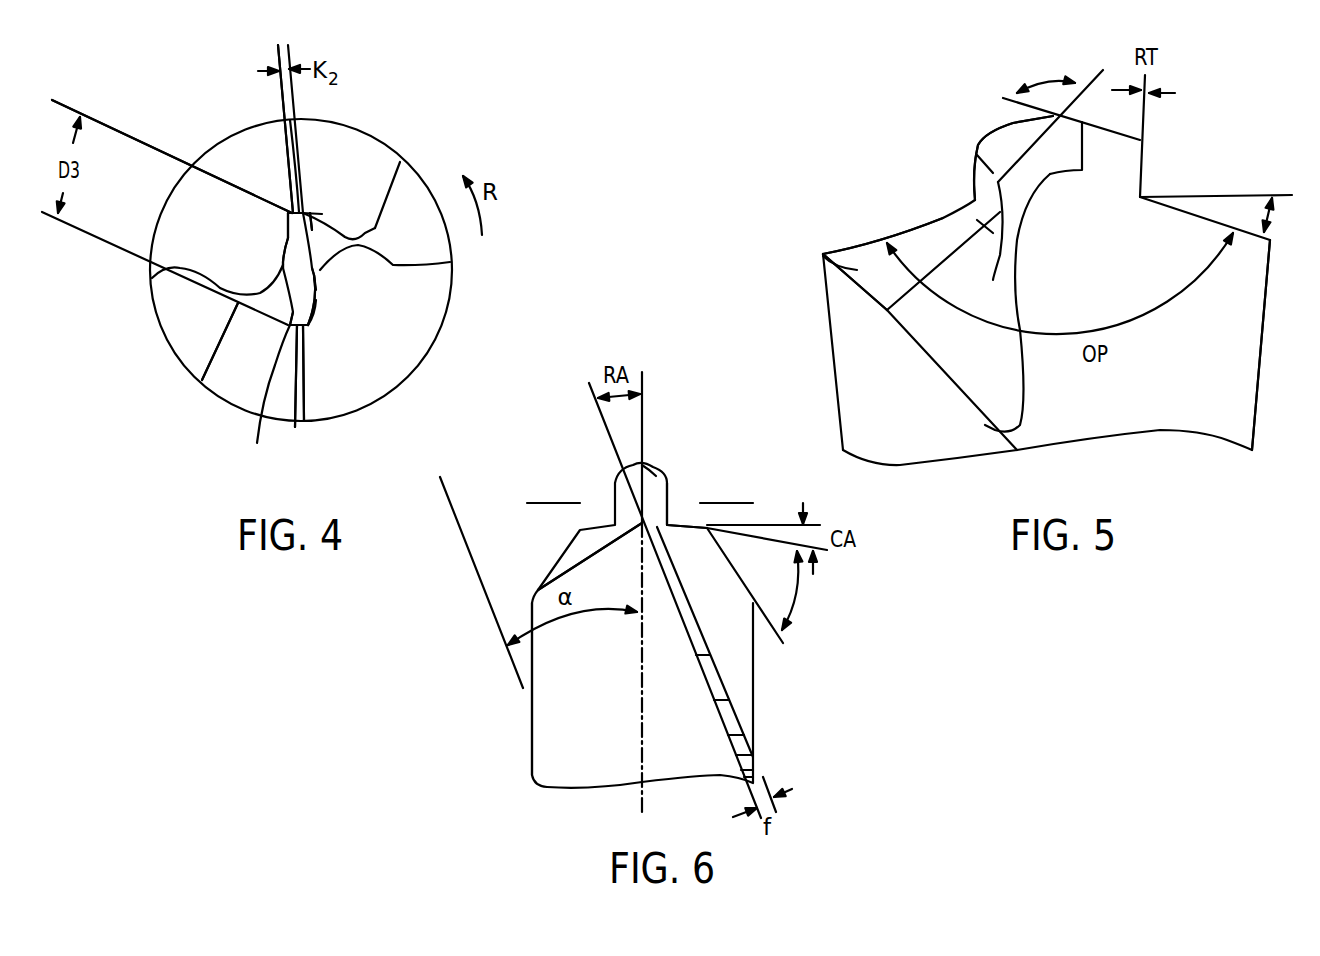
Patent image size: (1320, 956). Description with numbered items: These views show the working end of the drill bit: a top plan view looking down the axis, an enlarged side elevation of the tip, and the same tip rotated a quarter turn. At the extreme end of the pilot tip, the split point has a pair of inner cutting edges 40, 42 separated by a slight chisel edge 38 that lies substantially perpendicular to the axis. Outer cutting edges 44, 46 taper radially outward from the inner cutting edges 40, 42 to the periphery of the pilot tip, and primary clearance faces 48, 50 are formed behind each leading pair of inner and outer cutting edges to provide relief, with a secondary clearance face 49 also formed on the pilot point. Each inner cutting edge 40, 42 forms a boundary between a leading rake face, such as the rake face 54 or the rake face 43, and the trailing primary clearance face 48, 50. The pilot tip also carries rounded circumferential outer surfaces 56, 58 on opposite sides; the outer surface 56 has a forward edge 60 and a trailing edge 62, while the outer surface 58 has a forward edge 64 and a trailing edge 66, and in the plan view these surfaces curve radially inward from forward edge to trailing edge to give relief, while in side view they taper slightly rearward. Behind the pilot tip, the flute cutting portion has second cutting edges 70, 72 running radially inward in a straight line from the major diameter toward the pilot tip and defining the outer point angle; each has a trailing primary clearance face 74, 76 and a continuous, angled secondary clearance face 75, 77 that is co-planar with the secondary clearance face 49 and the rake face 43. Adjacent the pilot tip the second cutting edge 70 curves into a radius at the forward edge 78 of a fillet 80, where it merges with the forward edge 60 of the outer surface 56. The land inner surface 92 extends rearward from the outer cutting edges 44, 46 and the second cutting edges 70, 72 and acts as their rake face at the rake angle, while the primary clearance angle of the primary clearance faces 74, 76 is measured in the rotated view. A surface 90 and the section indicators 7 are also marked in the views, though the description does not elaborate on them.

In FIG. 6, the section line 7- 7 is at (539, 520).
In FIG. 4, the chisel edge 38 is at (312, 283).
In FIG. 4, the inner cutting edge 40 is at (318, 280).
In FIG. 4, the inner cutting edge 42 is at (280, 266).
In FIG. 5, the inner cutting edge 42 is at (1055, 113).
In FIG. 5, the rake face 43 is at (1073, 133).
In FIG. 4, the outer cutting edge 44 is at (313, 322).
In FIG. 4, the outer cutting edge 46 is at (285, 247).
In FIG. 5, the outer cutting edge 46 is at (1124, 136).
In FIG. 4, the primary clearance face 48 is at (287, 315).
In FIG. 5, the primary clearance face 48 is at (1010, 127).
In FIG. 5, the secondary clearance face 49 is at (1027, 172).
In FIG. 4, the primary clearance face 50 is at (312, 228).
In FIG. 4, the rake face 54 is at (290, 232).
In FIG. 4, the outer surface 56 is at (269, 400).
In FIG. 4, the outer surface 58 is at (321, 213).
In FIG. 4, the forward edge 60 is at (318, 372).
In FIG. 4, the trailing edge 62 is at (253, 304).
In FIG. 4, the forward edge 64 is at (263, 199).
In FIG. 4, the trailing edge 66 is at (375, 228).
In FIG. 4, the second cutting edge 70 is at (307, 420).
In FIG. 5, the second cutting edge 70 is at (850, 248).
In FIG. 4, the second cutting edge 72 is at (288, 120).
In FIG. 5, the second cutting edge 72 is at (1243, 237).
In FIG. 6, the second cutting edge 72 is at (540, 590).
In FIG. 5, the primary clearance face 74 is at (823, 255).
In FIG. 5, the secondary clearance face 75 is at (953, 350).
In FIG. 6, the primary clearance face 76 is at (678, 525).
In FIG. 6, the secondary clearance face 77 is at (722, 550).
In FIG. 5, the forward edge 78 is at (973, 203).
In FIG. 5, the fillet 80 is at (1004, 307).
In FIG. 6, the margin 90 is at (680, 607).
In FIG. 5, the land inner surface 92 is at (1227, 323).
In FIG. 6, the land inner surface 92 is at (597, 663).